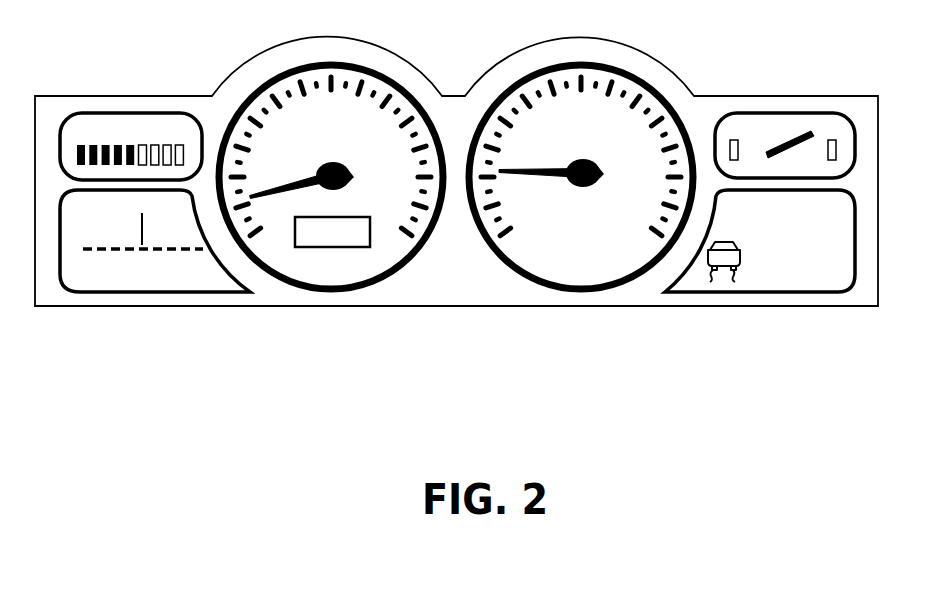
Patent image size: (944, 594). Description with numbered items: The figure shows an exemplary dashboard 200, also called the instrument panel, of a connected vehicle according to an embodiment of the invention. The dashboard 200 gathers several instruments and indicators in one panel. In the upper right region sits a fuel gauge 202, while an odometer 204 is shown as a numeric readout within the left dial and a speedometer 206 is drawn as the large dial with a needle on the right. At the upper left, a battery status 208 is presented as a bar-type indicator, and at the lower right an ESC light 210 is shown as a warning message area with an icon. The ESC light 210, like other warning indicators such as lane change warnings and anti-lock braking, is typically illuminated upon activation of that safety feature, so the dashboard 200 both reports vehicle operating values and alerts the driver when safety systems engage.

The dashboard 200 is at (456, 220).
The fuel gauge 202 is at (775, 125).
The odometer 204 is at (337, 247).
The speedometer 206 is at (573, 270).
The battery status 208 is at (138, 126).
The ESC light 210 is at (747, 278).